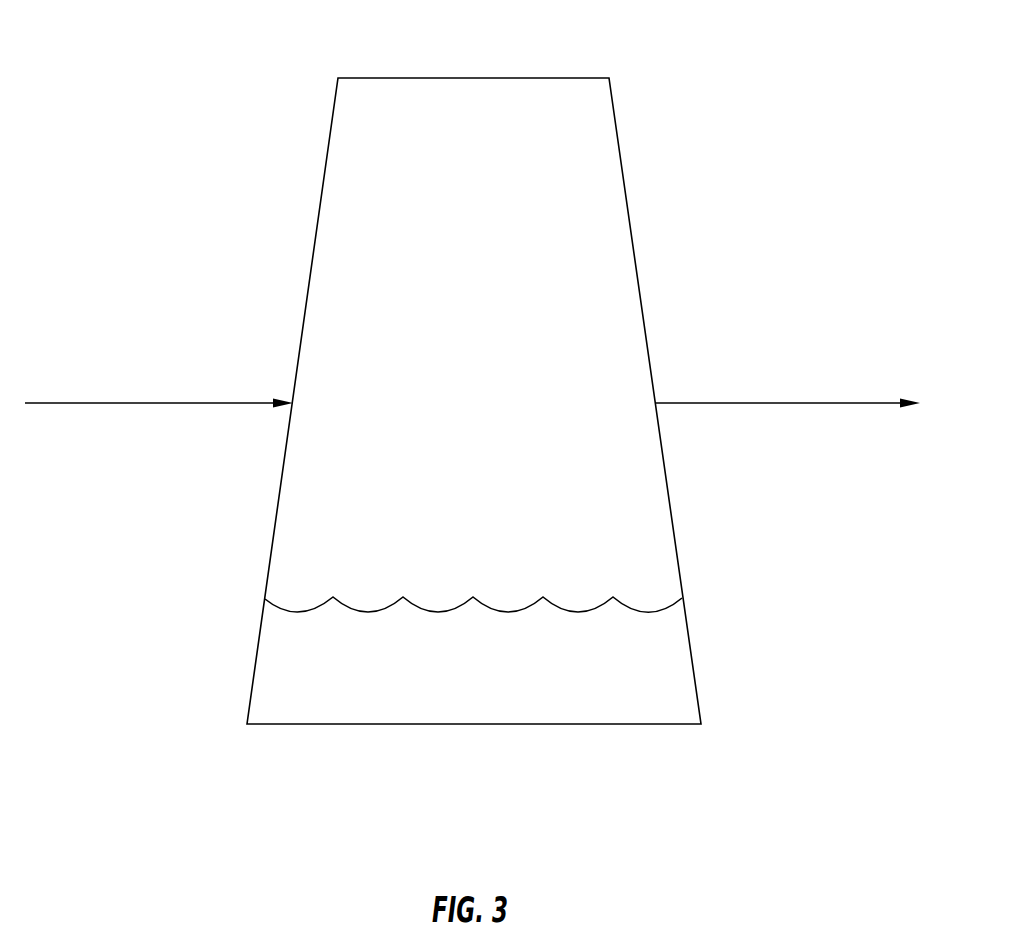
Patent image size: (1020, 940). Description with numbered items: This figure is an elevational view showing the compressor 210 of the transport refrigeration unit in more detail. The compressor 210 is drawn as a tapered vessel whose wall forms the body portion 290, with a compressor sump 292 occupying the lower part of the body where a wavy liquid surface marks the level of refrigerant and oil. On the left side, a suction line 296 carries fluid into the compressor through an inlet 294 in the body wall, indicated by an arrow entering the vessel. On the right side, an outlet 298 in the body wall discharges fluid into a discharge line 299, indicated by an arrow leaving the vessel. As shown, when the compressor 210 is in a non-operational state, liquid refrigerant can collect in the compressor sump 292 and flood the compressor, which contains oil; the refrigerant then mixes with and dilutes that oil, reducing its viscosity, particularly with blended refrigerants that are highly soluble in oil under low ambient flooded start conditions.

The compressor 210 is at (545, 64).
The body portion 290 is at (619, 147).
The compressor sump 292 is at (256, 660).
The inlet 294 is at (292, 398).
The suction line 296 is at (145, 405).
The outlet 298 is at (656, 398).
The discharge line 299 is at (795, 405).